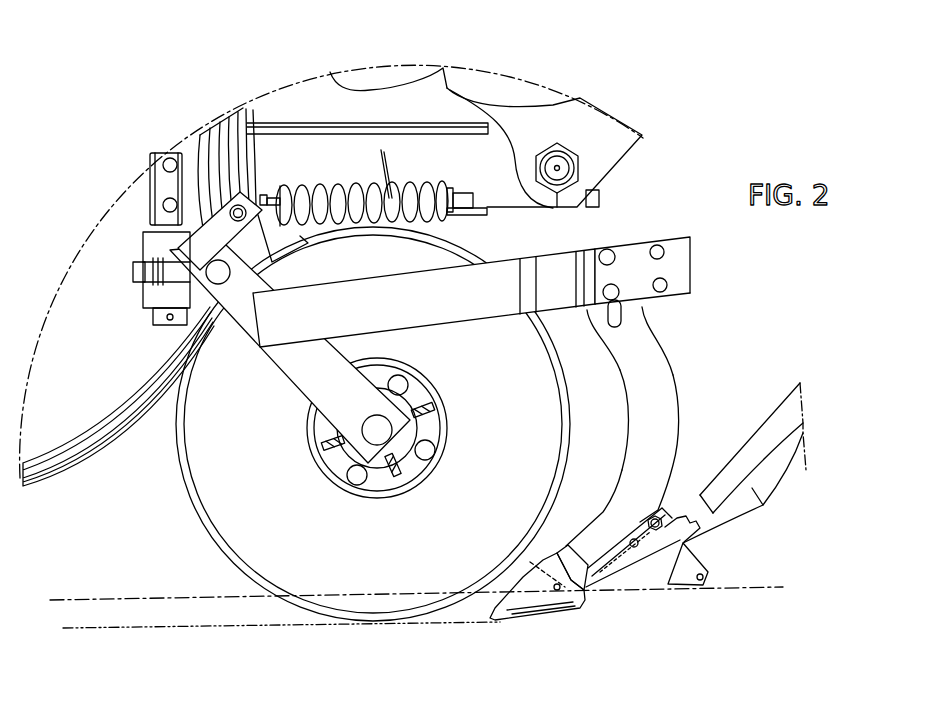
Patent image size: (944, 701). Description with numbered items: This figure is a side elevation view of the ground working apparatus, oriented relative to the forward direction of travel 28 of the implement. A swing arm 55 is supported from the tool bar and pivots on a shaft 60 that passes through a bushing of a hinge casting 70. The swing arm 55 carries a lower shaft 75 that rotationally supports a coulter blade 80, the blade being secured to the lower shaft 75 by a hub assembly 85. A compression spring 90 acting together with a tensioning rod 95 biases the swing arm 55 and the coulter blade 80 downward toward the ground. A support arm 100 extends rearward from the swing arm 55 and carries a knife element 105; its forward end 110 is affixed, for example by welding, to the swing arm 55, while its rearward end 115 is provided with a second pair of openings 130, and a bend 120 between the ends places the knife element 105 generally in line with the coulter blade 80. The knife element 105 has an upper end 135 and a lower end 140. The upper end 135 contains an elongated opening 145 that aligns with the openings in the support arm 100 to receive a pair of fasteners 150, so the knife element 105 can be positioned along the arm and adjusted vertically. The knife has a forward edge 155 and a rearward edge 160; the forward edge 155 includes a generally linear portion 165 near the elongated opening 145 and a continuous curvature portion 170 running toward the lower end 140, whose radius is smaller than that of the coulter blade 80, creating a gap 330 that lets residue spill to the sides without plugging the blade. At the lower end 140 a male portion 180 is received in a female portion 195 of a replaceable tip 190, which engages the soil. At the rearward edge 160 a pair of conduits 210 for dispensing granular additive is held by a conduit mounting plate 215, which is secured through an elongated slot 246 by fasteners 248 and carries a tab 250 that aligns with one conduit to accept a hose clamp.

The forward direction of travel 28 is at (816, 298).
The swing arm 55 is at (278, 380).
The shaft 60 is at (231, 276).
The hinge casting 70 is at (143, 298).
The lower shaft 75 is at (328, 480).
The coulter blade 80 is at (572, 407).
The hub assembly 85 is at (436, 422).
The compression spring 90 is at (400, 193).
The tensioning rod 95 is at (462, 197).
The support arm 100 is at (500, 258).
The knife element 105 is at (688, 355).
The forward end 110 is at (261, 358).
The rearward end 115 is at (687, 226).
The bend 120 is at (551, 317).
The second pair of openings 130 is at (670, 257).
The upper end 135 is at (654, 305).
The lower end 140 is at (570, 542).
The elongated opening 145 is at (623, 333).
The fasteners 150 is at (615, 262).
The forward edge 155 is at (629, 424).
The rearward edge 160 is at (667, 353).
The linear portion 165 is at (584, 318).
The curvature portion 170 is at (620, 477).
The male portion 180 is at (530, 570).
The tip 190 is at (537, 624).
The female portion 195 is at (507, 627).
The pair of conduits 210 is at (789, 501).
The conduit mounting plate 215 is at (719, 567).
The elongated slot 246 is at (644, 517).
The fasteners 248 is at (637, 556).
The tab 250 is at (695, 516).
The gap 330 is at (588, 423).